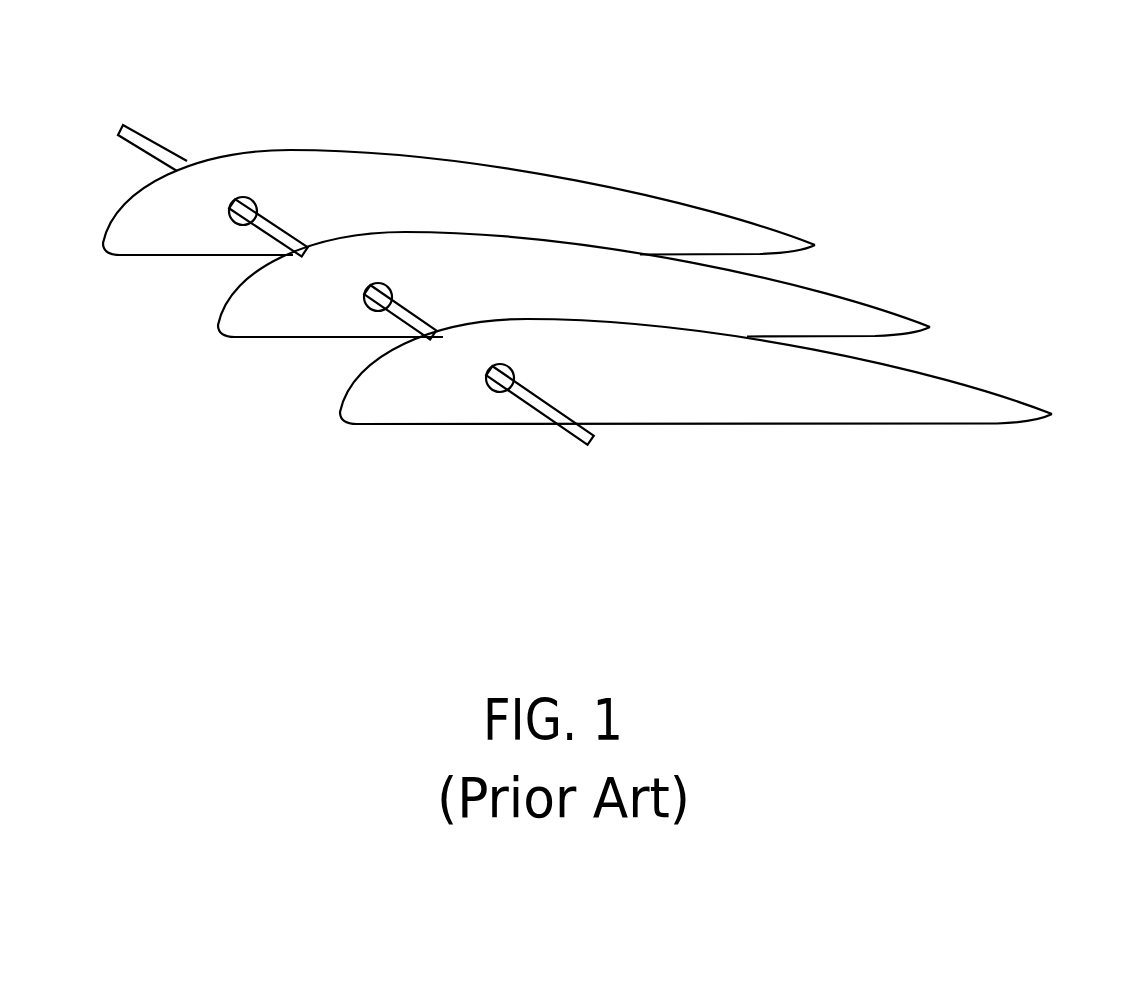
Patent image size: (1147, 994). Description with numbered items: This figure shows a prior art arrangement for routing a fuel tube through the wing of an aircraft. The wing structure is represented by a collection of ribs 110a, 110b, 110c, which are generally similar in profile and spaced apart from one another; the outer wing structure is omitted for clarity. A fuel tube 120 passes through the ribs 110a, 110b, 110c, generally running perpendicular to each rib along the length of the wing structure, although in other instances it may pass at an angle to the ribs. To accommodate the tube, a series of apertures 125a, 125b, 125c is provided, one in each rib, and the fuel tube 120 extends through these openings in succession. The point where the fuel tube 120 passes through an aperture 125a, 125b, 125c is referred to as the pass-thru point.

The rib 110a is at (438, 158).
The rib 110b is at (793, 280).
The rib 110c is at (902, 365).
The aperture 125a is at (237, 225).
The aperture 125b is at (363, 305).
The aperture 125c is at (480, 388).
The fuel tube 120 is at (560, 428).